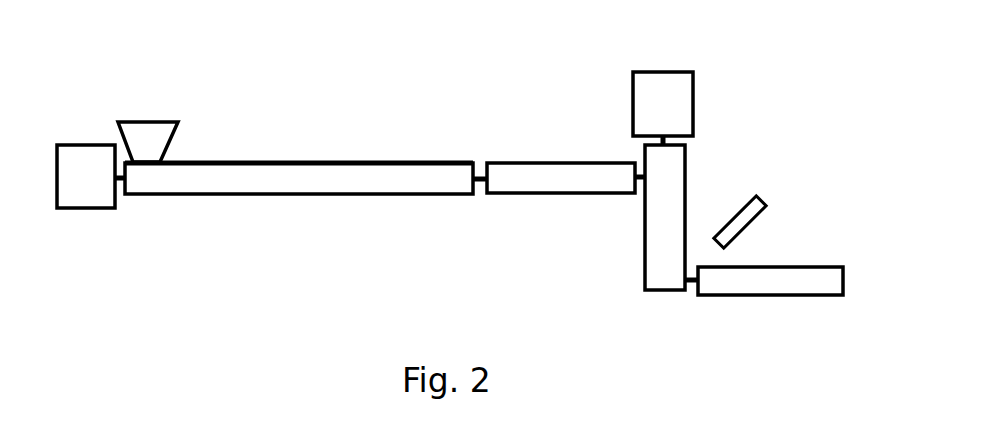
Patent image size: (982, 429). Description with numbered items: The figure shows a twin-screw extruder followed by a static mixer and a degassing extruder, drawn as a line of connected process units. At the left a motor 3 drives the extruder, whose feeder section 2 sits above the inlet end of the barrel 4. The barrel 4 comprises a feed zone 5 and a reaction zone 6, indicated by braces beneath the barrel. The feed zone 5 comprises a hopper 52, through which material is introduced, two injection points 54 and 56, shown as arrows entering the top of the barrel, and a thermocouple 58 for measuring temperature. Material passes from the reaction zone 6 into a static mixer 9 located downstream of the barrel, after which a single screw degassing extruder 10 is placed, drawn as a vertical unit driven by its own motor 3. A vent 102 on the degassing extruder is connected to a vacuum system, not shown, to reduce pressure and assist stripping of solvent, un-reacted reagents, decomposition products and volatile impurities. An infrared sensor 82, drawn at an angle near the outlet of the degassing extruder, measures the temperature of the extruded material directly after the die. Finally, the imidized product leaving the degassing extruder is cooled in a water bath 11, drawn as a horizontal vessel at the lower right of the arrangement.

The feeder section 2 is at (154, 110).
The motor 3 is at (375, 140).
The barrel 4 is at (130, 237).
The feed zone 5 is at (270, 197).
The reaction zone 6 is at (472, 197).
The static mixer 9 is at (635, 196).
The single screw degassing extruder 10 is at (665, 217).
The water bath 11 is at (698, 300).
The hopper 52 is at (197, 107).
The injection point 54 is at (192, 158).
The injection point 56 is at (230, 158).
The thermocouple 58 is at (258, 163).
The infrared sensor 82 is at (696, 261).
The vent 102 is at (685, 159).